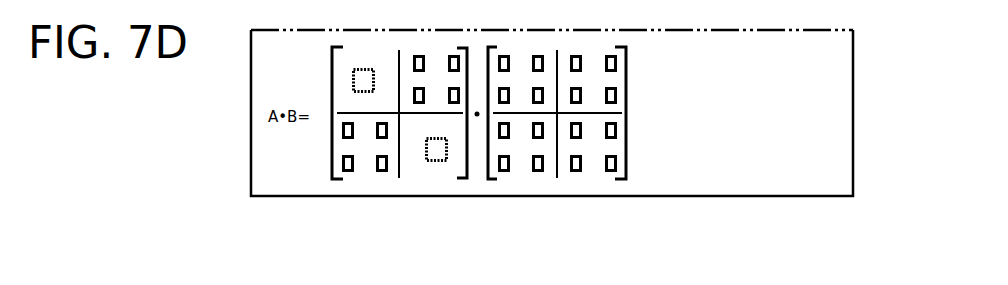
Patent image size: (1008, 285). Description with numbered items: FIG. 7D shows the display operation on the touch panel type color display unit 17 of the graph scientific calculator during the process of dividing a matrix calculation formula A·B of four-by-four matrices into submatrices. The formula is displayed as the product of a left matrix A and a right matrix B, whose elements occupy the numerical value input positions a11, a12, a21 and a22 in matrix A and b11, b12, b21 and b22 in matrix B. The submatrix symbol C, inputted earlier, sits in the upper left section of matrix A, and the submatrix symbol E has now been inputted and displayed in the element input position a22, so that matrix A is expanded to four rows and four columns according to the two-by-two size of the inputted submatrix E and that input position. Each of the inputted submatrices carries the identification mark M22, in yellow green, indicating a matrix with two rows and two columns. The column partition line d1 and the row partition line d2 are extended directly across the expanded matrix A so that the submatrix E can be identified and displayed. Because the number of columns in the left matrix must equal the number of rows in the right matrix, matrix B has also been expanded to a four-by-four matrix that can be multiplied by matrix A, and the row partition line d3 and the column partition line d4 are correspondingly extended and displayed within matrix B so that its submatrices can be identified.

The touch panel type color display unit 17 is at (847, 108).
The element input position a11 is at (362, 60).
The element input position a12 is at (435, 75).
The element input position a21 is at (360, 150).
The element input position a22 is at (446, 119).
The element input position b11 is at (522, 68).
The element input position b12 is at (612, 79).
The element input position b21 is at (523, 158).
The element input position b22 is at (594, 158).
The column partition line d1 is at (397, 67).
The row partition line d2 is at (352, 113).
The row partition line d3 is at (614, 110).
The column partition line d4 is at (558, 66).
The identification mark M22 is at (458, 203).